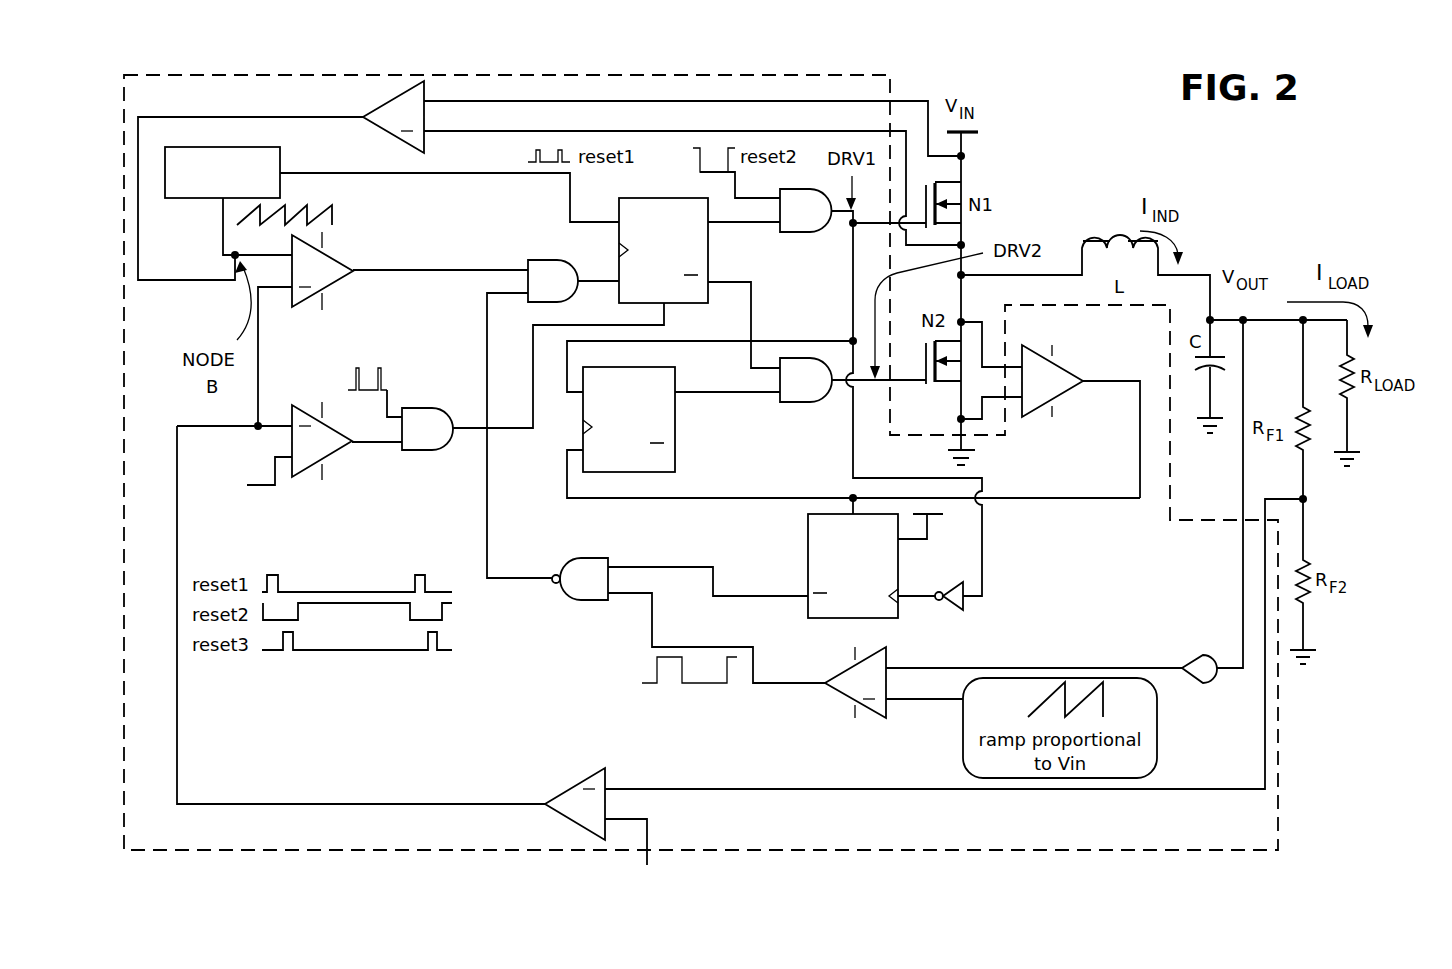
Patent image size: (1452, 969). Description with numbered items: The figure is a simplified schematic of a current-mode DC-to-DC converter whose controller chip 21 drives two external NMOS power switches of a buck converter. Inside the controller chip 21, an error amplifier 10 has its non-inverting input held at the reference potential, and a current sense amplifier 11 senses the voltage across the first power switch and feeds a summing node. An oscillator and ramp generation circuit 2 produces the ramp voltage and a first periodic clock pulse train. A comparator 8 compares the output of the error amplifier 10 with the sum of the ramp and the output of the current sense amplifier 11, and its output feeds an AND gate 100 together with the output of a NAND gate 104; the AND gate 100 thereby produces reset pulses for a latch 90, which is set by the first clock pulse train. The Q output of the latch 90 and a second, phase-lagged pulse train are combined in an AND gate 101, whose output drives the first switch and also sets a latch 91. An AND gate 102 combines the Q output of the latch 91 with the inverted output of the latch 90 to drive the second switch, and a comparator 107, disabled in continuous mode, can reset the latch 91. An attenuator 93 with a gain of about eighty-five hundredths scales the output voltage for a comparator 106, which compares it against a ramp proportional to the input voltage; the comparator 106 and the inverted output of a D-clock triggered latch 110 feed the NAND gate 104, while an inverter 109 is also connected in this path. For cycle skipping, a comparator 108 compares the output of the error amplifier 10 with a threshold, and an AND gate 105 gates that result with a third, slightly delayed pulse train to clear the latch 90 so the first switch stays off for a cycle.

The controller chip 21 is at (273, 73).
The current sense amplifier 11 is at (382, 134).
The oscillator and ramp generation circuit 2 is at (281, 166).
The comparator 8 is at (291, 297).
The AND gate 100 is at (545, 259).
The latch 90 is at (663, 196).
The AND gate 101 is at (796, 234).
The latch 91 is at (675, 458).
The AND gate 102 is at (797, 404).
The comparator 107 is at (1066, 372).
The attenuator 93 is at (1195, 655).
The comparator 106 is at (827, 672).
The NAND gate 104 is at (592, 556).
The D-clock triggered latch 110 is at (808, 552).
The inverter 109 is at (944, 582).
The comparator 108 is at (334, 447).
The AND gate 105 is at (422, 455).
The error amplifier 10 is at (575, 786).